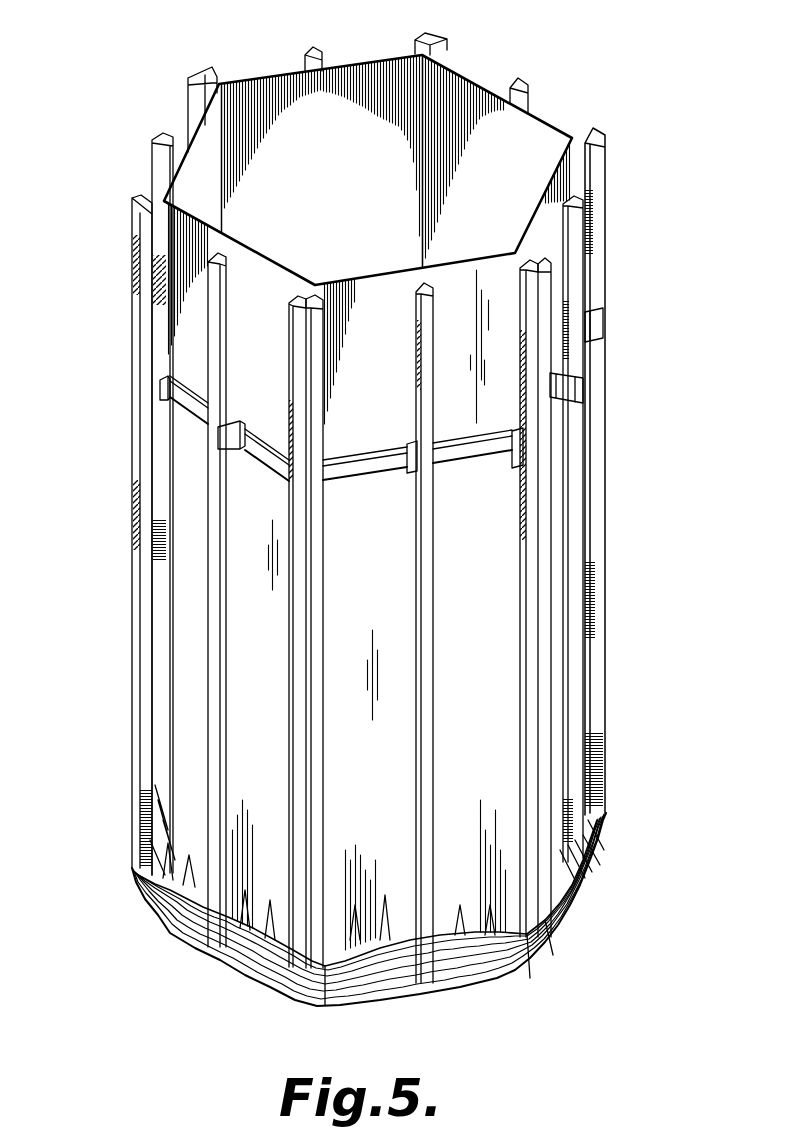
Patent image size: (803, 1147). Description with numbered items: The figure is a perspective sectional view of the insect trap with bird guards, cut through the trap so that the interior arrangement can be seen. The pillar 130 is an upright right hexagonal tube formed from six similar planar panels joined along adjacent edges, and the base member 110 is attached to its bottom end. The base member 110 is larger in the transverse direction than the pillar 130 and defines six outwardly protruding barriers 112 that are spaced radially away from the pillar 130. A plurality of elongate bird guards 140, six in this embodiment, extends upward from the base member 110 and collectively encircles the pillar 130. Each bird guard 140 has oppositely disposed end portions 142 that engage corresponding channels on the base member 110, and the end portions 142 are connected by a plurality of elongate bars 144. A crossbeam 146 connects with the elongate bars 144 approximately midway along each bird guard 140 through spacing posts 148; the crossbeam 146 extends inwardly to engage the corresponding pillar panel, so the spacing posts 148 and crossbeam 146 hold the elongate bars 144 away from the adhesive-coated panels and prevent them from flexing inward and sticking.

The base member 110 is at (584, 903).
The barriers 112 is at (605, 818).
The pillar 130 is at (465, 64).
The bird guards 140 is at (610, 155).
The end portions 142 is at (598, 578).
The elongate bars 144 is at (600, 180).
The crossbeam 146 is at (483, 449).
The spacing posts 148 is at (567, 383).